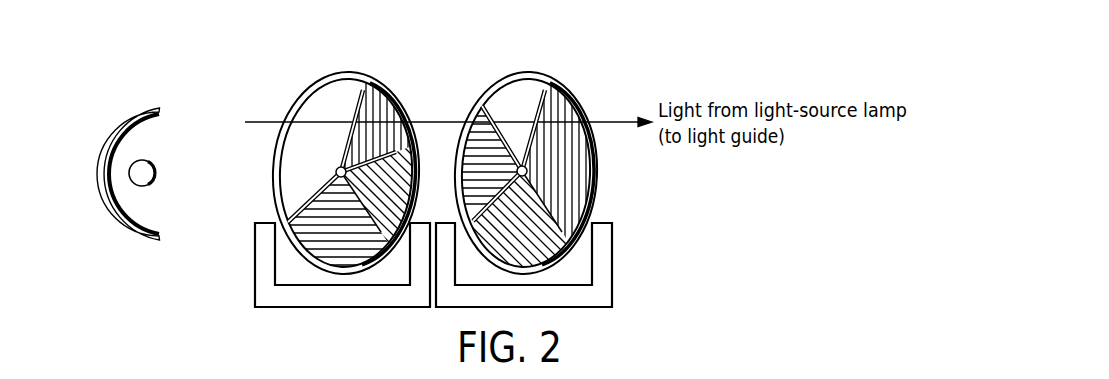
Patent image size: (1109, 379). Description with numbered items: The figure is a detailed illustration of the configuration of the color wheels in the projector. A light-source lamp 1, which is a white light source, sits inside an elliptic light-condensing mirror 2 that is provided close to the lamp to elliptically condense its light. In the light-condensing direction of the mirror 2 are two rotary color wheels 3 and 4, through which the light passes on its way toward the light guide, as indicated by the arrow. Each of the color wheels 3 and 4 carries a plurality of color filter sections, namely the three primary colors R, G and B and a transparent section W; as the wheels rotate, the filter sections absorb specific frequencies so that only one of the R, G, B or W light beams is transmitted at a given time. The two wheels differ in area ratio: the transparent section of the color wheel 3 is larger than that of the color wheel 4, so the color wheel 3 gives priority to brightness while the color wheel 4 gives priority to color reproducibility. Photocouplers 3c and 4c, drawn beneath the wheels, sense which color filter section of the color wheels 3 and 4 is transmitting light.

The light-source lamp 1 is at (156, 167).
The elliptic light-condensing mirror 2 is at (158, 108).
The color wheel 3 is at (385, 161).
The color wheel 4 is at (519, 161).
The photocoupler 3c is at (255, 267).
The photocoupler 4c is at (614, 251).